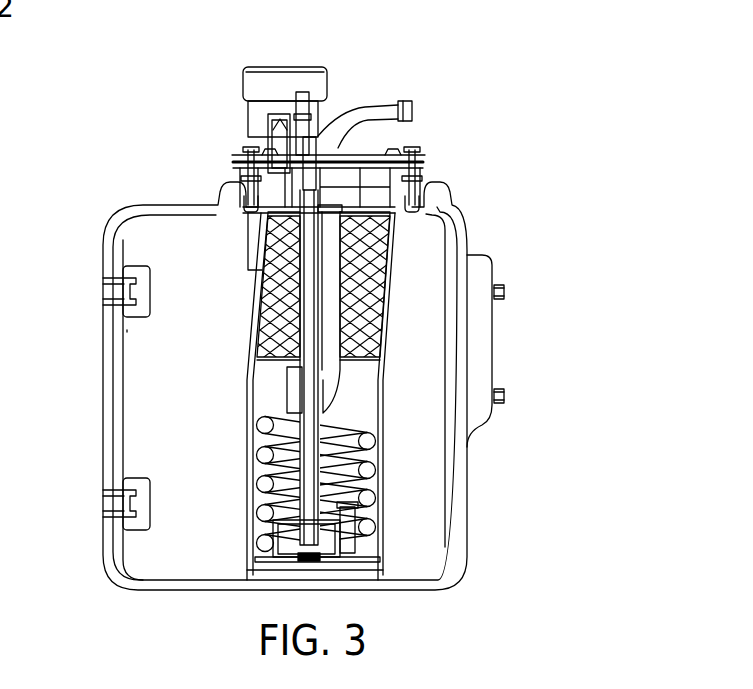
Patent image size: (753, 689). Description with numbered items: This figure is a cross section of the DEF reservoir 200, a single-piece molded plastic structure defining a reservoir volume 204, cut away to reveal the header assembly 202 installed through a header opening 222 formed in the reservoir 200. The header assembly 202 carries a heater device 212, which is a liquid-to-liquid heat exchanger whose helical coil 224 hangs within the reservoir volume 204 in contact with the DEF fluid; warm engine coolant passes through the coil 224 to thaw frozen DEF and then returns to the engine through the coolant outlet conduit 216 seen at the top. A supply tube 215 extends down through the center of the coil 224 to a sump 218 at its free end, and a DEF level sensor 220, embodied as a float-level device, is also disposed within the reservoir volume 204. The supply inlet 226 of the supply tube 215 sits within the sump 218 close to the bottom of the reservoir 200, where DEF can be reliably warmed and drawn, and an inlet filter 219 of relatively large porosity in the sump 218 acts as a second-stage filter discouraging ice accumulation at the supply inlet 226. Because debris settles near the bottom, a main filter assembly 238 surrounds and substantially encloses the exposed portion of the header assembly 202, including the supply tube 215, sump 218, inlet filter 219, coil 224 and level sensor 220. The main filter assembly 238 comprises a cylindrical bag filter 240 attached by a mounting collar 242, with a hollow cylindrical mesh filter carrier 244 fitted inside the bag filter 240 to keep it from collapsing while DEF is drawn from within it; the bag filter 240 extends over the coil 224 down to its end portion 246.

The DEF reservoir 200 is at (456, 223).
The header assembly 202 is at (368, 55).
The reservoir volume 204 is at (210, 387).
The heater device 212 is at (347, 440).
The supply tube 215 is at (306, 336).
The coolant outlet conduit 216 is at (408, 112).
The sump 218 is at (325, 545).
The inlet filter 219 is at (347, 520).
The DEF level sensor 220 is at (292, 392).
The header opening 222 is at (420, 138).
The coil 224 is at (400, 476).
The supply inlet 226 is at (305, 560).
The main filter assembly 238 is at (178, 335).
The bag filter 240 is at (395, 272).
The mounting collar 242 is at (278, 222).
The filter carrier 244 is at (263, 290).
The end portion 246 is at (322, 560).